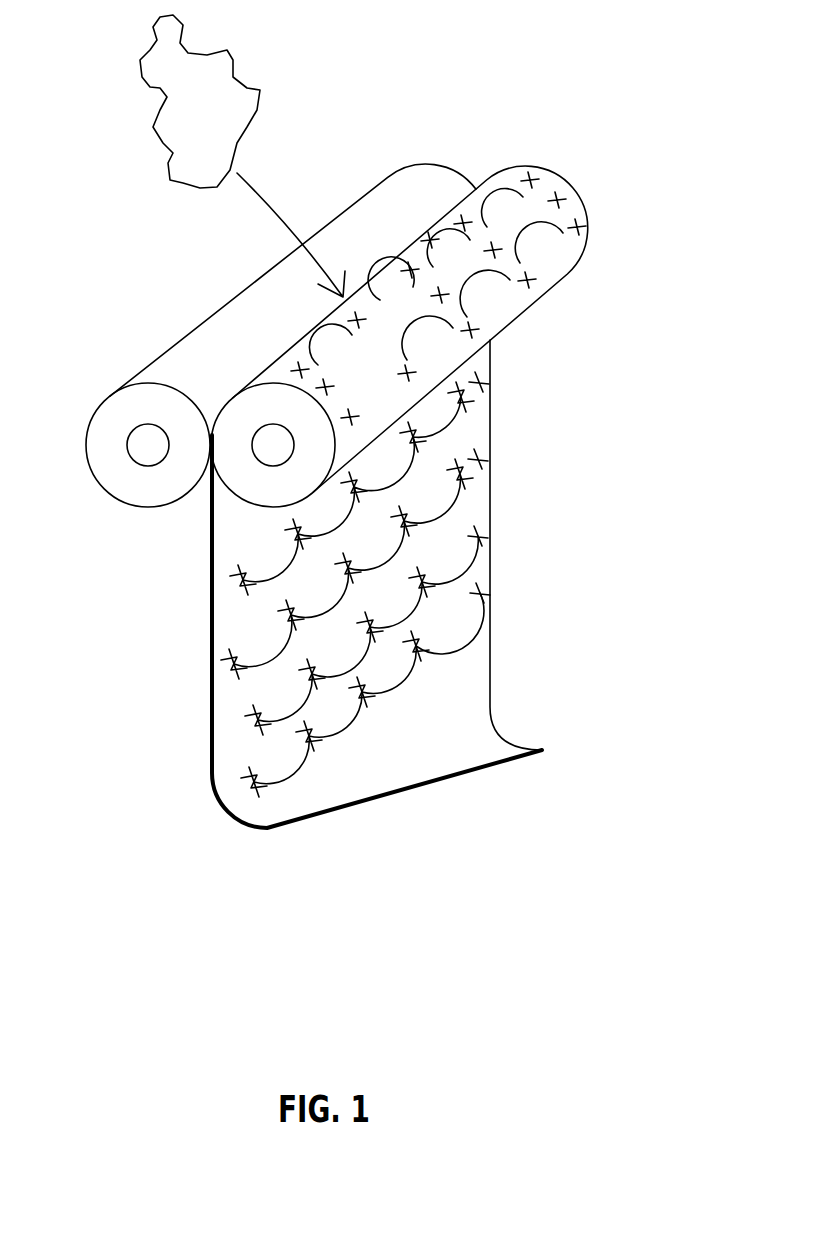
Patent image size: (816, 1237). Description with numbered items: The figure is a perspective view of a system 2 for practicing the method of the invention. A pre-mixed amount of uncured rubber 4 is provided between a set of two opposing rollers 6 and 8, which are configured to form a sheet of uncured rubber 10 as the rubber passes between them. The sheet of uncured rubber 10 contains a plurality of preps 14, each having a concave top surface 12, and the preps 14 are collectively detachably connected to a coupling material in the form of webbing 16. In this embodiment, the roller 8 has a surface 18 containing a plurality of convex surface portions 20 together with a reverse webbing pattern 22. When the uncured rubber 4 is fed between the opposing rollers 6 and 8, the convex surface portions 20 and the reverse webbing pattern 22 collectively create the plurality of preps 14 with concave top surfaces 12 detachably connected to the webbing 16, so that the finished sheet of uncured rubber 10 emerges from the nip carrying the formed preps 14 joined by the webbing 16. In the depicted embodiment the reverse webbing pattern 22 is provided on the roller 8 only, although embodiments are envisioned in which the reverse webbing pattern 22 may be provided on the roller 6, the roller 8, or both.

The system 2 is at (570, 82).
The uncured rubber 4 is at (157, 88).
The roller 6 is at (430, 165).
The roller 8 is at (358, 327).
The sheet of uncured rubber 10 is at (341, 584).
The concave top surfaces 12 is at (272, 572).
The preps 14 is at (240, 574).
The webbing 16 is at (241, 588).
The surface 18 is at (298, 347).
The convex surface portions 20 is at (327, 340).
The reverse webbing pattern 22 is at (272, 372).